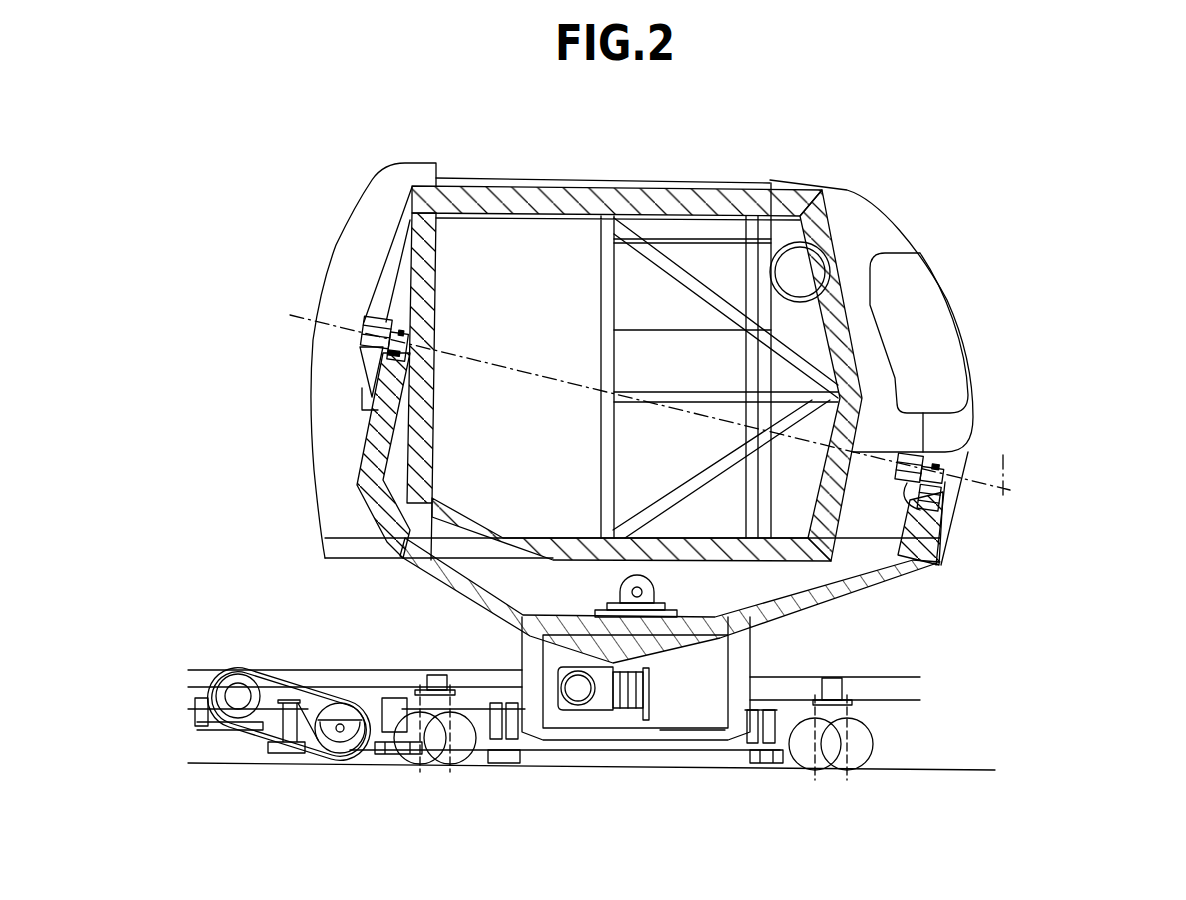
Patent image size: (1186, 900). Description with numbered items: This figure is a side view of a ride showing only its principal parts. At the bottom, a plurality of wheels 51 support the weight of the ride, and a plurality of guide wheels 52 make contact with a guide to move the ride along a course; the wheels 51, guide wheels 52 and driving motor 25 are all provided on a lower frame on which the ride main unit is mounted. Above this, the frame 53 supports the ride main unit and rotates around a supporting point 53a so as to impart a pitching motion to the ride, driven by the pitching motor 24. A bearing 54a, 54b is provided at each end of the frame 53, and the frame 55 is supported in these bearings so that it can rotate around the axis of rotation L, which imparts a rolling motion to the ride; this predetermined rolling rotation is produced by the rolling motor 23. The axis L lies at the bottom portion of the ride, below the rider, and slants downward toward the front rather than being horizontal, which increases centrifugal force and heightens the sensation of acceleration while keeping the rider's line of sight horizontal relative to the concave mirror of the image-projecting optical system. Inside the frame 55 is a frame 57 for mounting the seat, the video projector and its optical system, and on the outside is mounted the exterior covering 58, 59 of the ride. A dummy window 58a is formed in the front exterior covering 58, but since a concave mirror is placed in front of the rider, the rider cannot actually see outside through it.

The rolling motor 23 is at (362, 470).
The pitching motor 24 is at (560, 655).
The driving motor 25 is at (238, 668).
The wheels 51 is at (858, 762).
The guide wheels 52 is at (745, 758).
The frame 53 is at (830, 600).
The supporting point 53a is at (655, 590).
The bearing 54a is at (363, 316).
The bearing 54b is at (940, 512).
The frame 55 is at (412, 243).
The frame 57 is at (597, 352).
The front exterior covering 58 is at (893, 224).
The dummy window 58a is at (966, 340).
The exterior covering 59 is at (315, 357).
The axis of rotation L is at (655, 407).